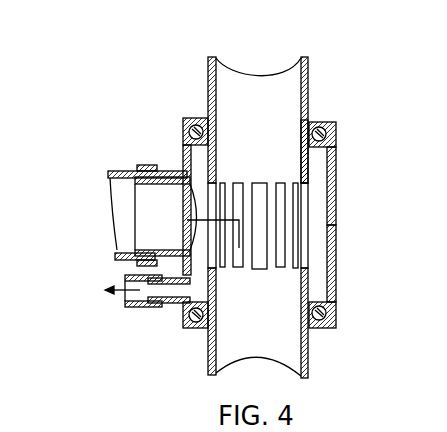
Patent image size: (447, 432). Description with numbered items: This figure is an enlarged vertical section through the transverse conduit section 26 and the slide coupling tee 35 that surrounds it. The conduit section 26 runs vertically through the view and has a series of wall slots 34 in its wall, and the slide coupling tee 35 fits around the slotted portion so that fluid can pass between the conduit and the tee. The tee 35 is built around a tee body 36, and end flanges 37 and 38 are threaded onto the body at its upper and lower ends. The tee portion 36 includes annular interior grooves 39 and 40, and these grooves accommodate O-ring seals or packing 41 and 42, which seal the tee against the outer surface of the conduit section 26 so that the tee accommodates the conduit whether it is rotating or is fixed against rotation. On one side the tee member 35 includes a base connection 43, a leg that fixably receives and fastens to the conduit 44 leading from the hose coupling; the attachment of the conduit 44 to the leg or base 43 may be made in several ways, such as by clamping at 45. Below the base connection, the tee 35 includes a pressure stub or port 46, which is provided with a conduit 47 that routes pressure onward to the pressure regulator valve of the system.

The conduit section 26 is at (288, 216).
The wall slots 34 is at (259, 215).
The slide coupling tee 35 is at (394, 223).
The tee body 36 is at (359, 263).
The end flange 37 is at (349, 132).
The end flange 38 is at (350, 316).
The annular interior groove 39 is at (276, 151).
The annular interior groove 40 is at (351, 299).
The O-ring seal 41 is at (341, 116).
The O-ring seal 42 is at (274, 323).
The base connection 43 is at (149, 182).
The conduit 44 is at (140, 190).
The clamping 45 is at (123, 272).
The pressure stub 46 is at (161, 326).
The conduit 47 is at (122, 315).